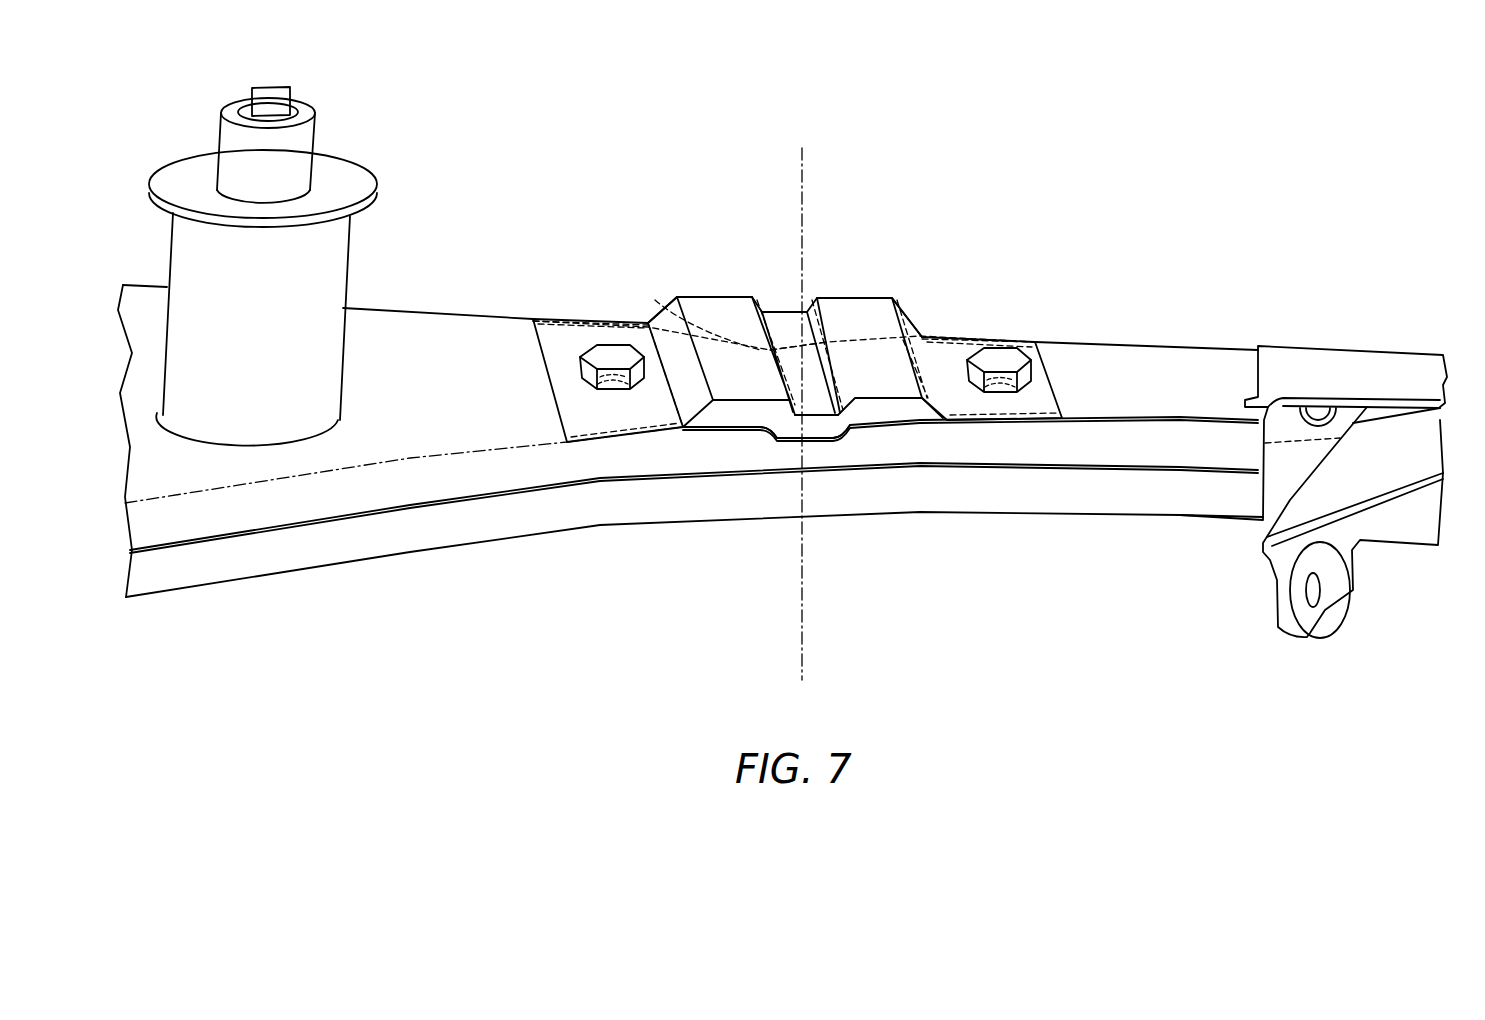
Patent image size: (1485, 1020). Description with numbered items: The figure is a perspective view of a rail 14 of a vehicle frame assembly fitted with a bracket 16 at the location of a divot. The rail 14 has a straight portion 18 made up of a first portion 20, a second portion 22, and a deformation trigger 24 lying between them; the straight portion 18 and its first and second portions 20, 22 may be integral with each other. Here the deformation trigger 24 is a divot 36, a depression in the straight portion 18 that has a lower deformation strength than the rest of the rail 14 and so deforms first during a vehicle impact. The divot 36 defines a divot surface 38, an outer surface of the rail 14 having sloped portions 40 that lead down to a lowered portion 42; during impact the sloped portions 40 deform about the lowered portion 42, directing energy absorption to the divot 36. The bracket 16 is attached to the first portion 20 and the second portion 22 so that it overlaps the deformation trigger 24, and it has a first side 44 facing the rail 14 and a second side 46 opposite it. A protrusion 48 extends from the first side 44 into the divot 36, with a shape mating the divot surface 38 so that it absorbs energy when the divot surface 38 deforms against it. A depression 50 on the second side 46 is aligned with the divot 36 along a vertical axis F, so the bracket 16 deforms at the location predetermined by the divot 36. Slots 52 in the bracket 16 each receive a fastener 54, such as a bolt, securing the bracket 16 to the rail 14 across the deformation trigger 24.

The rail 14 is at (1185, 377).
The bracket 16 is at (912, 350).
The straight portion 18 is at (902, 452).
The first portion 20 is at (578, 415).
The second portion 22 is at (1038, 398).
The deformation trigger 24 is at (775, 437).
The divot 36 is at (790, 440).
The divot surface 38 is at (750, 298).
The sloped portions 40 is at (728, 297).
The lowered portion 42 is at (812, 330).
The first side 44 is at (717, 428).
The second side 46 is at (690, 297).
The protrusion 48 is at (847, 433).
The depression 50 is at (788, 328).
The slot 52 is at (613, 390).
The fastener 54 is at (610, 348).
The vertical axis F is at (806, 172).